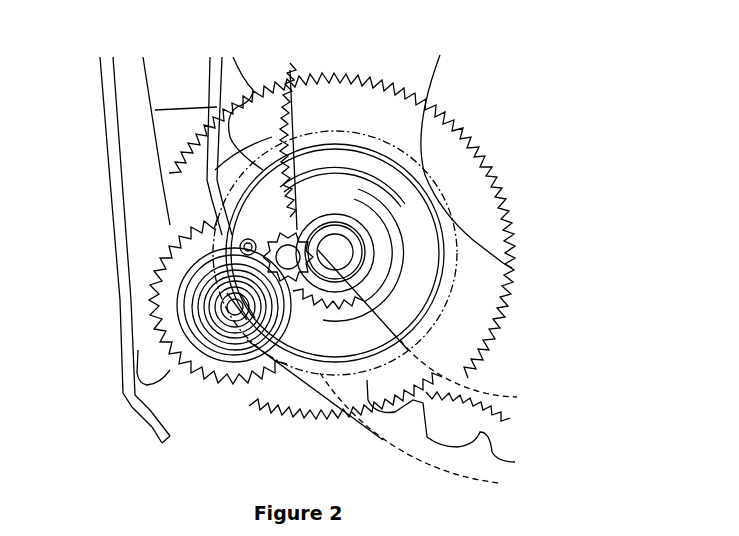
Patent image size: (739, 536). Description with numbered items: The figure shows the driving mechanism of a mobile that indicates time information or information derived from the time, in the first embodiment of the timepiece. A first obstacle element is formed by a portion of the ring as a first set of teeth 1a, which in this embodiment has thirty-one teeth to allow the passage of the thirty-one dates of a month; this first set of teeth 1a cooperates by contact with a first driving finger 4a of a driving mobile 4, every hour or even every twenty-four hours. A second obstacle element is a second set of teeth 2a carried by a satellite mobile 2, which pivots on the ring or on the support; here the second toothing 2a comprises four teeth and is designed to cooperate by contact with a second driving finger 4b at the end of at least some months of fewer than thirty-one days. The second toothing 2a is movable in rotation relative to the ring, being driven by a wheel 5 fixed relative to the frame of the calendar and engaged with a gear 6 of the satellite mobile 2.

The first set of teeth 1a is at (492, 415).
The satellite mobile 2 is at (169, 303).
The second set of teeth 2a is at (293, 259).
The driving mobile 4 is at (362, 63).
The first driving finger 4a is at (303, 310).
The second driving finger 4b is at (360, 294).
The wheel 5 is at (290, 72).
The gear 6 is at (190, 253).